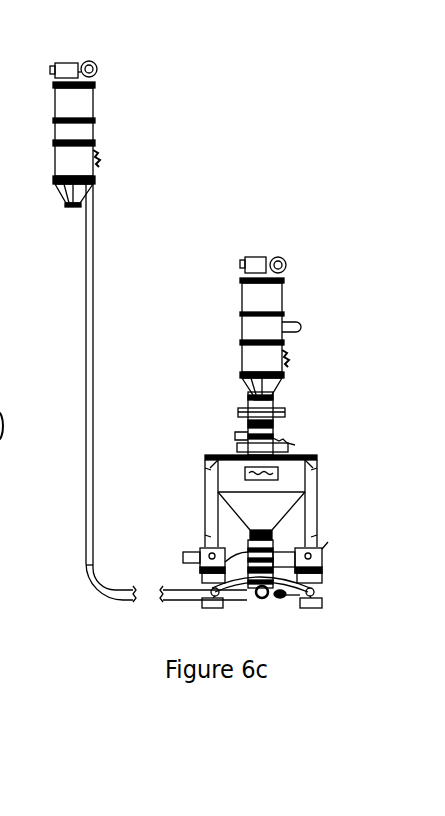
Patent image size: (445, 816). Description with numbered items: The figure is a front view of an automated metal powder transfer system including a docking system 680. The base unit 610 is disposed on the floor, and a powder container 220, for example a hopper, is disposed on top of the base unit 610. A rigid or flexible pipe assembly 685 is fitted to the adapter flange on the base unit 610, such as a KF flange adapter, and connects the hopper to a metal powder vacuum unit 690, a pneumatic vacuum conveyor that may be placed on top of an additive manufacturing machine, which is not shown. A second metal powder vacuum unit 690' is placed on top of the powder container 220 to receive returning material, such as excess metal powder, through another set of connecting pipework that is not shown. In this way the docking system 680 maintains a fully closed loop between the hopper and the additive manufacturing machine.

The docking system 680 is at (297, 175).
The metal powder vacuum unit 690 is at (126, 119).
The second metal powder vacuum unit 690' is at (322, 323).
The pipe assembly 685 is at (99, 305).
The powder container 220 is at (292, 477).
The base unit 610 is at (340, 568).